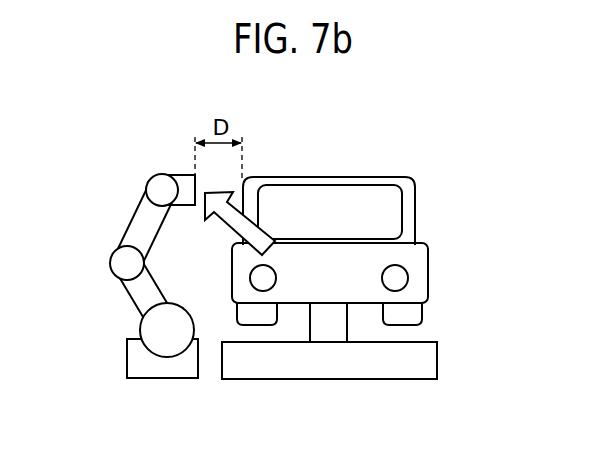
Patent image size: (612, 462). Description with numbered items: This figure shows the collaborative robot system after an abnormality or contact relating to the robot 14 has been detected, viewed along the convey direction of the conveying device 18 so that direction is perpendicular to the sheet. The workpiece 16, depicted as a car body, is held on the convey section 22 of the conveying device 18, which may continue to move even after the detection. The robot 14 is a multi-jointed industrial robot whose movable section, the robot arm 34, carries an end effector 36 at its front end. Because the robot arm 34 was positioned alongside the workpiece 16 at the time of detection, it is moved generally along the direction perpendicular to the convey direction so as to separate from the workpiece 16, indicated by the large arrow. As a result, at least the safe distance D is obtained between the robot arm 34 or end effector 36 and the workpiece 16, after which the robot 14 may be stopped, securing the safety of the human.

The collaborative robot 14 is at (121, 244).
The workpiece 16 is at (417, 198).
The conveying device 18 is at (437, 370).
The convey section 22 is at (347, 333).
The robot arm 34 is at (132, 220).
The end effector 36 is at (184, 177).